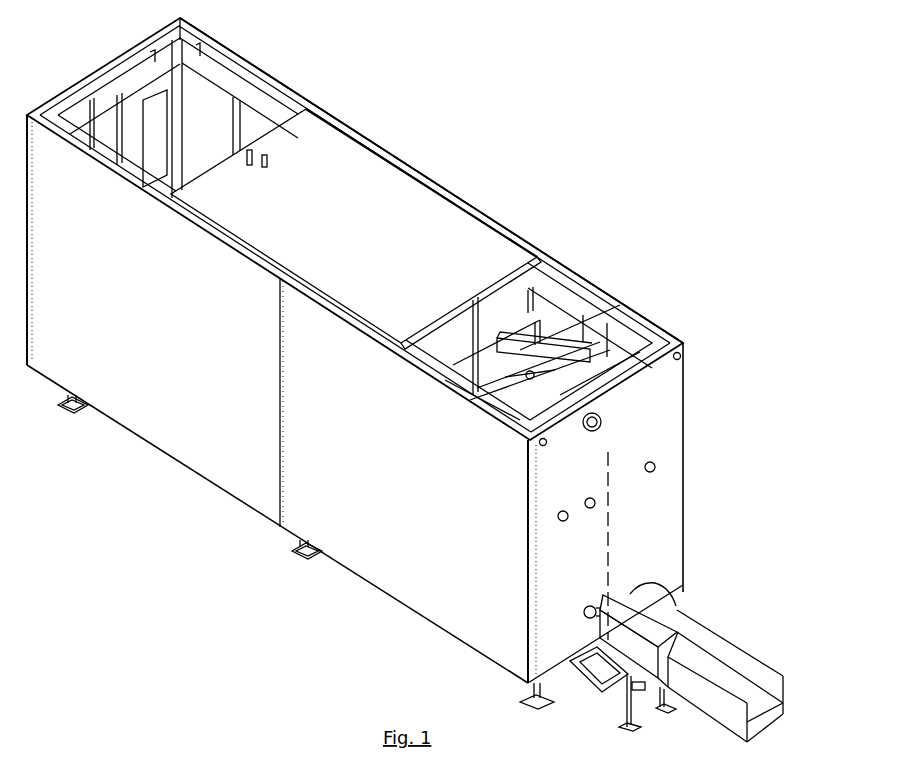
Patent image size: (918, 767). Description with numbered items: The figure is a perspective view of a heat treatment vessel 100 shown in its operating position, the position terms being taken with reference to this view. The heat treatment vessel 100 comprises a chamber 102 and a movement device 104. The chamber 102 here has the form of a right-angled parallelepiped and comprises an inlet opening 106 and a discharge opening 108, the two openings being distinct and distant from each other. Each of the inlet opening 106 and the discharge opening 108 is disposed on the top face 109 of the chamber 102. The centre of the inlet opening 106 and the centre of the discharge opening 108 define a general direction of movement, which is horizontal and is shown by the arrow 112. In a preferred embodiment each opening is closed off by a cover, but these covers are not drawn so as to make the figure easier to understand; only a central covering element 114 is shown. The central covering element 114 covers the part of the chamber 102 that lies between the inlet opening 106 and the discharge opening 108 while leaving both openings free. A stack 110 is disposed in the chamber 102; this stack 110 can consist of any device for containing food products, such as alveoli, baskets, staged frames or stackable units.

The heat treatment vessel 100 is at (606, 137).
The chamber 102 is at (215, 465).
The movement device 104 is at (740, 627).
The inlet opening 106 is at (597, 277).
The discharge opening 108 is at (288, 68).
The top face 109 is at (436, 212).
The stack 110 is at (577, 332).
The arrow 112 is at (343, 500).
The central covering element 114 is at (356, 229).